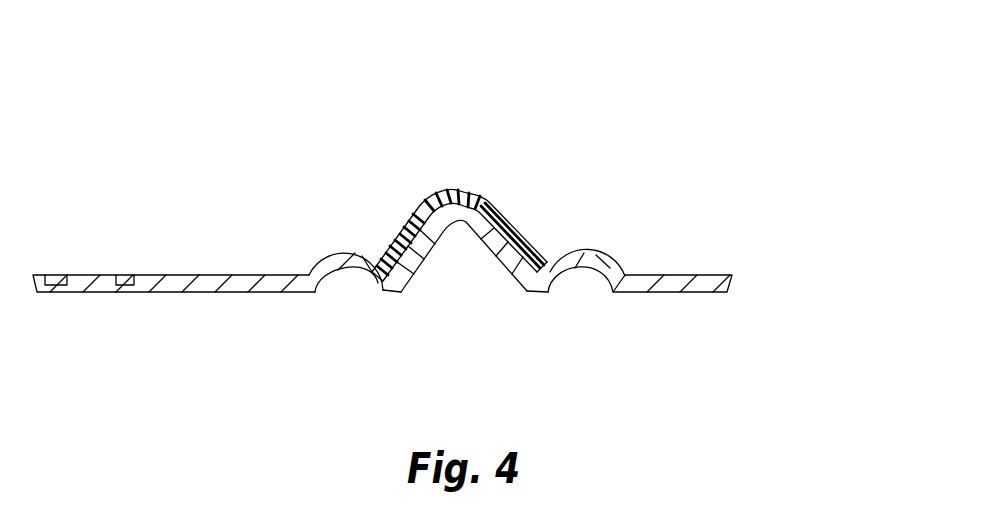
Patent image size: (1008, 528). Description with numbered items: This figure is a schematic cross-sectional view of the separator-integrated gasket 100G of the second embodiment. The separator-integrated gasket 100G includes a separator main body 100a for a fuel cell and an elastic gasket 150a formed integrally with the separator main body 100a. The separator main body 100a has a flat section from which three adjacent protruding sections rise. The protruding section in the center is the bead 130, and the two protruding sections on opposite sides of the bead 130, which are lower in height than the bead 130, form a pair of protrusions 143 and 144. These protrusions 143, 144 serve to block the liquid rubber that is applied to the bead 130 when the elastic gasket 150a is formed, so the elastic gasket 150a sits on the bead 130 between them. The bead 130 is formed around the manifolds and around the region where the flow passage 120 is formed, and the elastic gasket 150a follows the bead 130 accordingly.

The separator-integrated gasket 100G is at (672, 143).
The separator main body 100a is at (266, 250).
The flow passage 120 is at (118, 275).
The bead 130 is at (462, 223).
The protrusion 143 is at (333, 258).
The protrusion 144 is at (588, 250).
The elastic gasket 150a is at (480, 195).